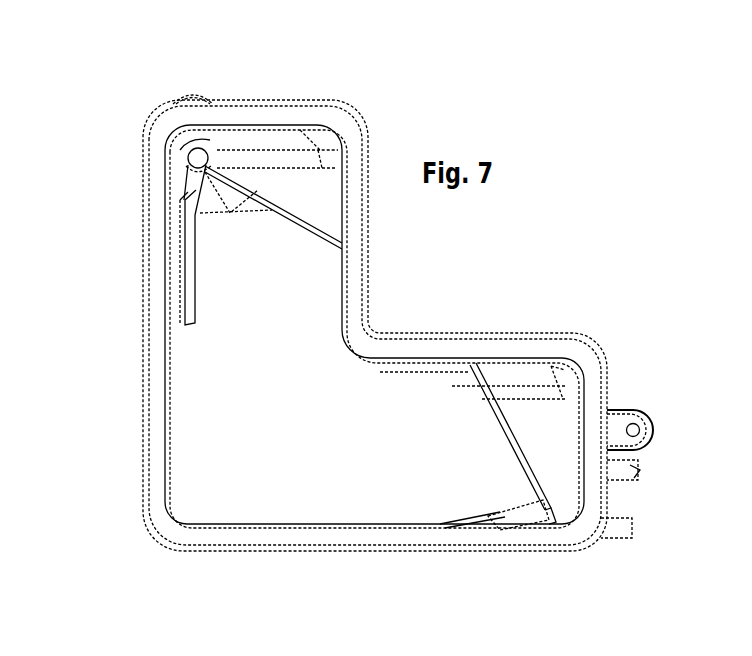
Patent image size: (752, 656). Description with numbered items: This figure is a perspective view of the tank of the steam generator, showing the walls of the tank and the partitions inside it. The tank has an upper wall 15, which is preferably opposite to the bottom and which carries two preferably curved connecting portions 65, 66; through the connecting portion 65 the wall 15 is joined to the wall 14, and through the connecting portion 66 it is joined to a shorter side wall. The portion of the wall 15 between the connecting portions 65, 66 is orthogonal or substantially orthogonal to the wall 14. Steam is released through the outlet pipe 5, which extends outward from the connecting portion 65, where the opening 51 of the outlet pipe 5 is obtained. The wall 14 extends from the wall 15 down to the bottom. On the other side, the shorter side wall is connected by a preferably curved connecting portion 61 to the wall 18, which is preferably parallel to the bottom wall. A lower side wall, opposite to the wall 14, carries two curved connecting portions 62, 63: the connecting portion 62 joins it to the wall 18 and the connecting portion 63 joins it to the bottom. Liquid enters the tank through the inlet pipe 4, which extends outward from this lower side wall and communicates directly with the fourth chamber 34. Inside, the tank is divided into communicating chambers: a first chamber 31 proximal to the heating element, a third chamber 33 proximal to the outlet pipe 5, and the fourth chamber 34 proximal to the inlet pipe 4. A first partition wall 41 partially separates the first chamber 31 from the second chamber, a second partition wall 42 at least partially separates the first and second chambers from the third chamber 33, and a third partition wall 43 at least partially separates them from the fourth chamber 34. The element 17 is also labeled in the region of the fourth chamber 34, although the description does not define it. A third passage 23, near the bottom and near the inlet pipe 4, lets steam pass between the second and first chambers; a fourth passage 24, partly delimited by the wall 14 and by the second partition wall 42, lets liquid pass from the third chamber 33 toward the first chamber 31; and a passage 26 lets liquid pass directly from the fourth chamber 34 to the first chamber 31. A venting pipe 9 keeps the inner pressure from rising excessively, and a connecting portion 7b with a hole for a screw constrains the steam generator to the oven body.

The inlet pipe 4 is at (612, 532).
The outlet pipe 5 is at (187, 97).
The connecting portion 7b is at (622, 427).
The venting pipe 9 is at (637, 472).
The wall 14 is at (175, 295).
The wall 15 is at (237, 142).
The partition rib 17 is at (512, 417).
The wall 18 is at (538, 372).
The third passage 23 is at (473, 523).
The fourth passage 24 is at (185, 240).
The passage 26 is at (537, 515).
The first chamber 31 is at (284, 397).
The third chamber 33 is at (318, 198).
The fourth chamber 34 is at (556, 443).
The first partition wall 41 is at (200, 395).
The second partition wall 42 is at (262, 180).
The third partition wall 43 is at (510, 524).
The opening 51 is at (192, 155).
The connecting portion 61 is at (369, 356).
The connecting portion 62 is at (567, 378).
The connecting portion 63 is at (712, 0).
The connecting portion 65 is at (192, 142).
The connecting portion 66 is at (326, 143).